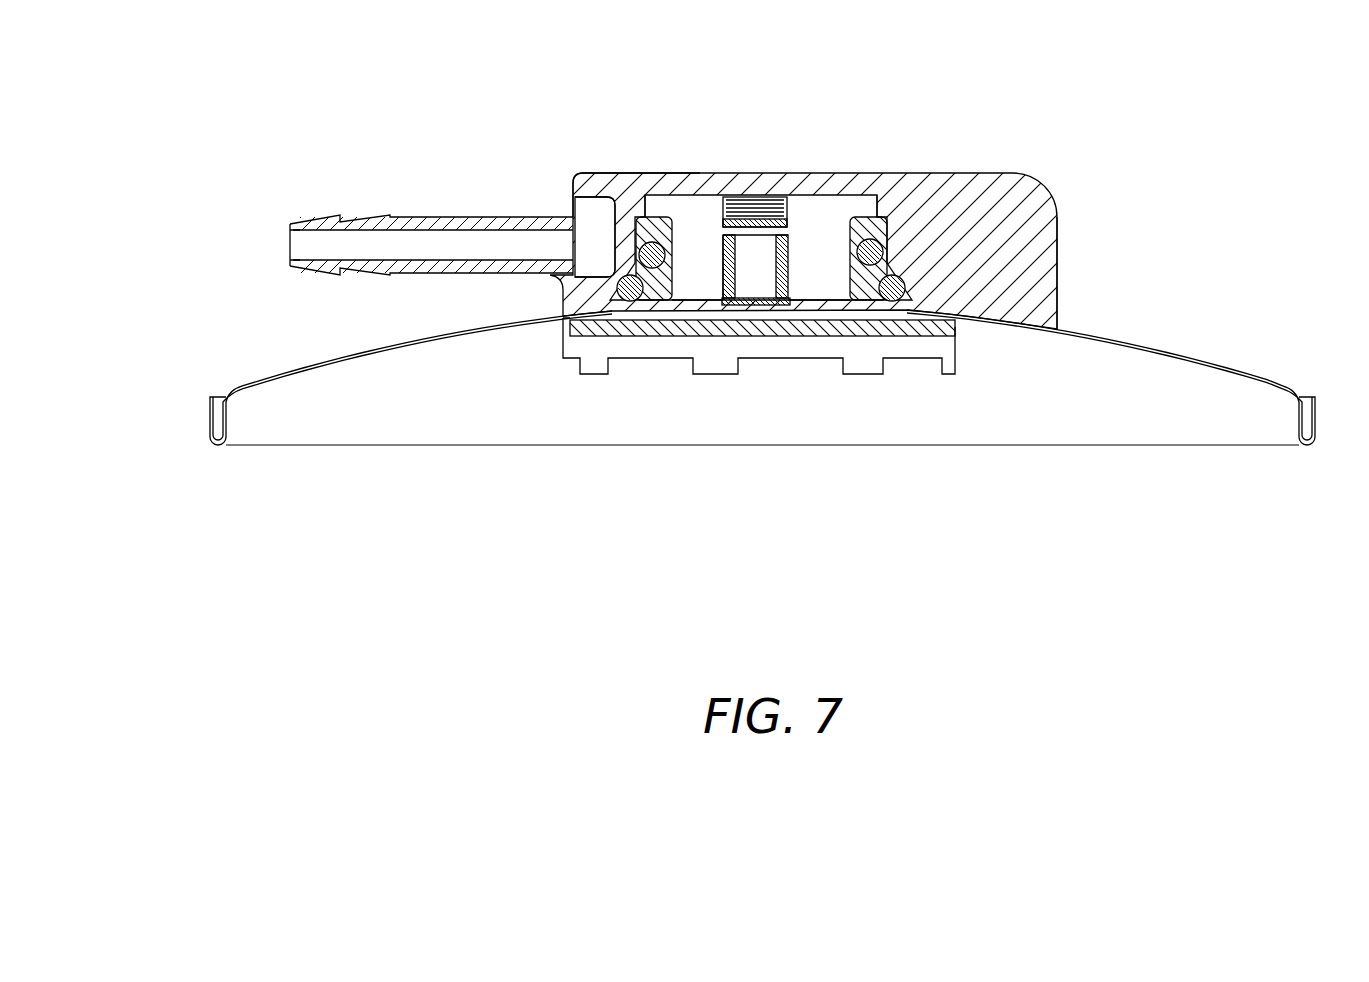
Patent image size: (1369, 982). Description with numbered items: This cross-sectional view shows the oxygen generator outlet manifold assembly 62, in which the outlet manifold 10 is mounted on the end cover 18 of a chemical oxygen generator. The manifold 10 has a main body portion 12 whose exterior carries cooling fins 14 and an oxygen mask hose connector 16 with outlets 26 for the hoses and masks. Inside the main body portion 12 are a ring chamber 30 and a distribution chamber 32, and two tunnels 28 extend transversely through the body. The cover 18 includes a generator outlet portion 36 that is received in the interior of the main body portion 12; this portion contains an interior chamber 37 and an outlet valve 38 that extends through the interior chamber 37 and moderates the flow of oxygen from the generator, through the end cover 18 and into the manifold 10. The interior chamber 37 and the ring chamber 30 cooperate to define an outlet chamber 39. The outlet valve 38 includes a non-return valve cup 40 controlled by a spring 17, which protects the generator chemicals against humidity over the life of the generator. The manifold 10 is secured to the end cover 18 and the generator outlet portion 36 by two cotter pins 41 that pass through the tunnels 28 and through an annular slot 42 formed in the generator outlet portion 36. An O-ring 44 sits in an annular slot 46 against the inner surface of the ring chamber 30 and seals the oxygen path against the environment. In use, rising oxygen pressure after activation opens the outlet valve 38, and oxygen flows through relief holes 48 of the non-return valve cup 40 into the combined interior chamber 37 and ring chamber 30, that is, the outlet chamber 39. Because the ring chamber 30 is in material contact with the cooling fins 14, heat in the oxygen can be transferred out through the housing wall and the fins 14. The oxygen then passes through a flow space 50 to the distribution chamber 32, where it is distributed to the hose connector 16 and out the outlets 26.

The outlet manifold 10 is at (786, 205).
The main body portion 12 is at (573, 173).
The cooling fins 14 is at (982, 196).
The oxygen mask hose connectors 16 is at (407, 215).
The spring 17 is at (757, 200).
The end cover 18 is at (258, 375).
The outlets 26 is at (290, 243).
The tunnels 28 is at (617, 288).
The ring chamber 30 is at (698, 258).
The distribution chamber 32 is at (580, 252).
The generator outlet portion 36 is at (880, 227).
The interior chamber 37 is at (707, 265).
The outlet valve 38 is at (800, 222).
The outlet chamber 39 is at (707, 255).
The non-return valve cup 40 is at (773, 292).
The cotter pins 41 is at (633, 302).
The annular slot 42 is at (652, 302).
The O-ring 44 is at (640, 215).
The annular slot 46 is at (683, 250).
The relief holes 48 is at (718, 228).
The flow space 50 is at (651, 242).
The oxygen generator outlet manifold assembly 62 is at (1064, 135).